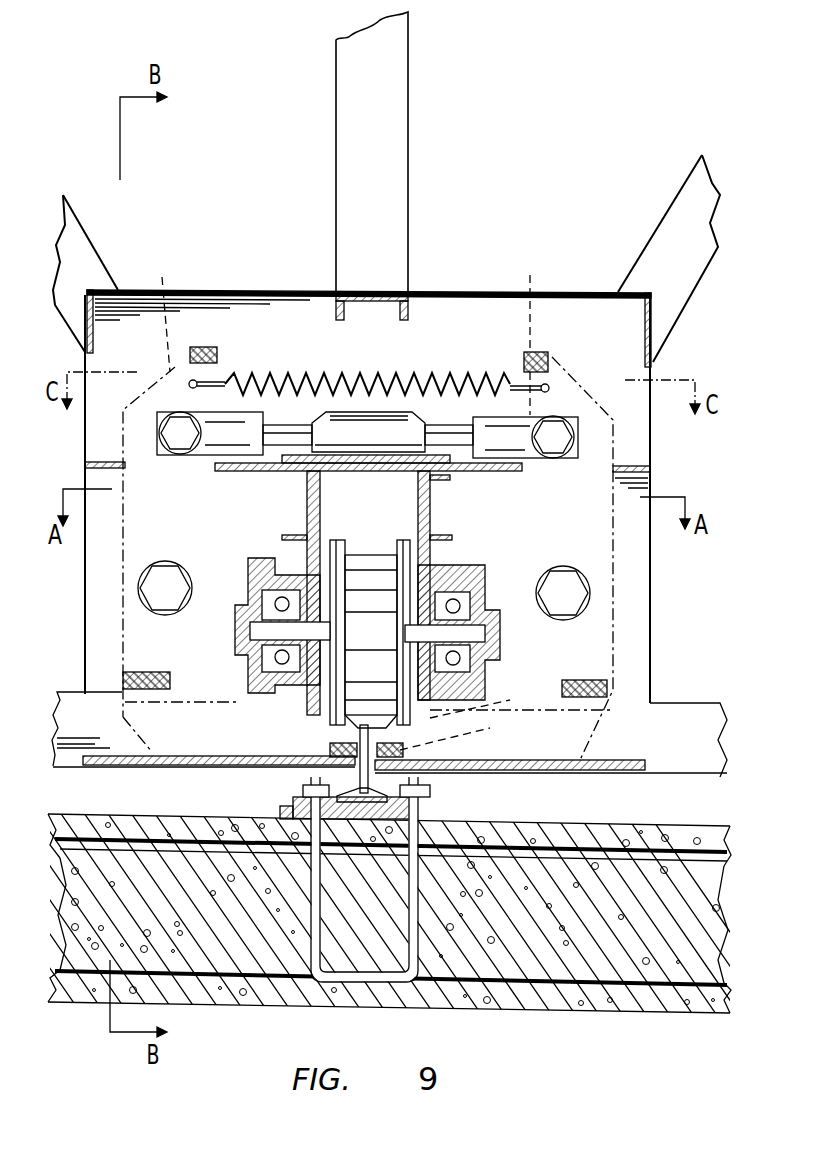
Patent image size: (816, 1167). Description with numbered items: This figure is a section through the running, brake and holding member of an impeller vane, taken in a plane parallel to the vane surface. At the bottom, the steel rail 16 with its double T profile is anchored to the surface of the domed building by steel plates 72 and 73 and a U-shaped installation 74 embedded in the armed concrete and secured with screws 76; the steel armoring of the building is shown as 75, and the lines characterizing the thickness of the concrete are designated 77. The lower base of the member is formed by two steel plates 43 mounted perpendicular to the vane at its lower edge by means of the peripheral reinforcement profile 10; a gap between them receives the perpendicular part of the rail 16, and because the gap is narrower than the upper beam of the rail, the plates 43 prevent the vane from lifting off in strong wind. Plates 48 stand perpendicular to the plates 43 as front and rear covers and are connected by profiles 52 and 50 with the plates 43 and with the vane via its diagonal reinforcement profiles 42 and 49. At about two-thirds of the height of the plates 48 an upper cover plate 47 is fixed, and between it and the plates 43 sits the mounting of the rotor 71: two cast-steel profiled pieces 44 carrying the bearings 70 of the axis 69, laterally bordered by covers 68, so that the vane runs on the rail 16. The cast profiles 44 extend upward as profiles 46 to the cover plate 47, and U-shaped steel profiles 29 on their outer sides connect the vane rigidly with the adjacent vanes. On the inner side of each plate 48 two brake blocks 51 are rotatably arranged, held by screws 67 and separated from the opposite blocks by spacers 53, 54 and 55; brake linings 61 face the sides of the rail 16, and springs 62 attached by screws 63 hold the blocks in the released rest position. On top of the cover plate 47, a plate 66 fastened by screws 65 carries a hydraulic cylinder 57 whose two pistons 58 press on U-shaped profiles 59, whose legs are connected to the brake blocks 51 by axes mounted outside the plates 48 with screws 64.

The peripheral reinforcement profile 10 is at (74, 705).
The steel rail 16 is at (357, 738).
The U-shaped profiles 29 is at (297, 515).
The diagonal profile 42 is at (343, 210).
The steel plates 43 is at (186, 756).
The profiled pieces 44 is at (260, 690).
The profiles 46 is at (325, 485).
The upper cover plate 47 is at (100, 462).
The plates 48 is at (133, 340).
The diagonal profile 49 is at (72, 228).
The profile 50 is at (93, 300).
The brake blocks 51 is at (163, 308).
The profile 52 is at (350, 296).
The spacer 53 is at (530, 331).
The spacer 54 is at (610, 678).
The spacer 55 is at (463, 725).
The hydraulic cylinder 57 is at (338, 412).
The pistons 58 is at (287, 428).
The U-shaped profiles 59 is at (233, 423).
The brake linings 61 is at (433, 780).
The springs 62 is at (438, 428).
The screws 63 is at (552, 387).
The screws 64 is at (560, 437).
The screws 65 is at (441, 380).
The plate 66 is at (455, 478).
The screws 67 is at (578, 595).
The cover 68 is at (482, 585).
The axis 69 is at (470, 632).
The bearings 70 is at (450, 582).
The rotor 71 is at (335, 565).
The steel plate 72 is at (428, 792).
The steel plate 73 is at (433, 812).
The U-shaped installation 74 is at (300, 850).
The steel armoring 75 is at (645, 853).
The screws 76 is at (303, 786).
The lines characterizing thickness 77 is at (163, 814).